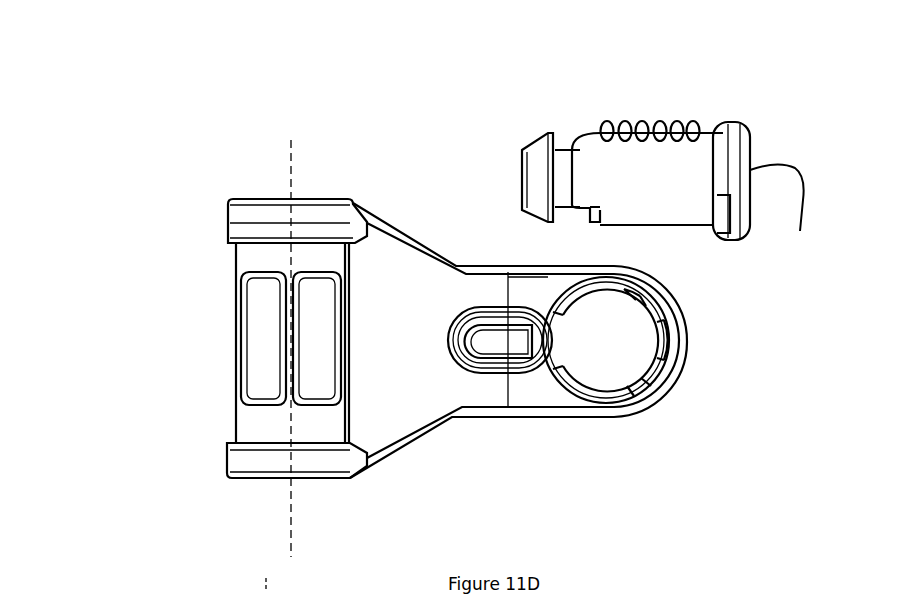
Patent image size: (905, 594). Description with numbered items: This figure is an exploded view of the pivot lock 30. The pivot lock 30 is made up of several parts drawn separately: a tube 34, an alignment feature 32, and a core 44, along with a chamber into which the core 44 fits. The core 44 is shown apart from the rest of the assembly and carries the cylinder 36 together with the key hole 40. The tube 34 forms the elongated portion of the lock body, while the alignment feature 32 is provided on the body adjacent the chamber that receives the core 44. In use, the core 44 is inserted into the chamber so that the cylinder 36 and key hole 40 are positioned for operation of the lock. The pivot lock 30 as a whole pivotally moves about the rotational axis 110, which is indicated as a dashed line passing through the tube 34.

The pivot lock 30 is at (156, 389).
The alignment feature 32 is at (518, 338).
The tube 34 is at (288, 253).
The cylinder 36 is at (517, 182).
The key hole 40 is at (783, 216).
The core 44 is at (637, 168).
The rotational axis 110 is at (283, 509).